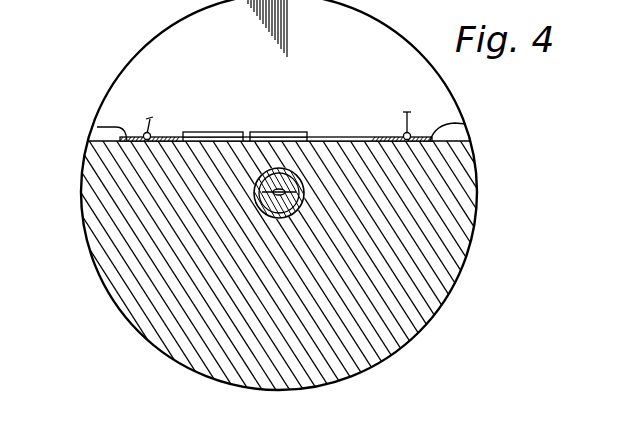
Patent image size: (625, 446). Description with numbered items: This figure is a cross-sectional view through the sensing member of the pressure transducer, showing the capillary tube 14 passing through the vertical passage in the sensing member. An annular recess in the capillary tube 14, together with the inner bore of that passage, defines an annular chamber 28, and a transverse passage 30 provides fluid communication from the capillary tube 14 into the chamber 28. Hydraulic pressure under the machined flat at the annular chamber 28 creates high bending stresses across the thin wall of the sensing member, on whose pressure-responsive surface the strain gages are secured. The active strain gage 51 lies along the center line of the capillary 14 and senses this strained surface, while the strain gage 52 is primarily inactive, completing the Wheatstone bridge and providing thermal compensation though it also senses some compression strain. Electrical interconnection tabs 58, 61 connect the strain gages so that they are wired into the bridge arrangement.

The capillary tube 14 is at (303, 180).
The annular chamber 28 is at (257, 203).
The transverse passage 30 is at (300, 216).
The active strain gage 51 is at (278, 131).
The strain gage 52 is at (224, 131).
The electrical interconnection tab 58 is at (97, 127).
The electrical interconnection tab 61 is at (466, 124).